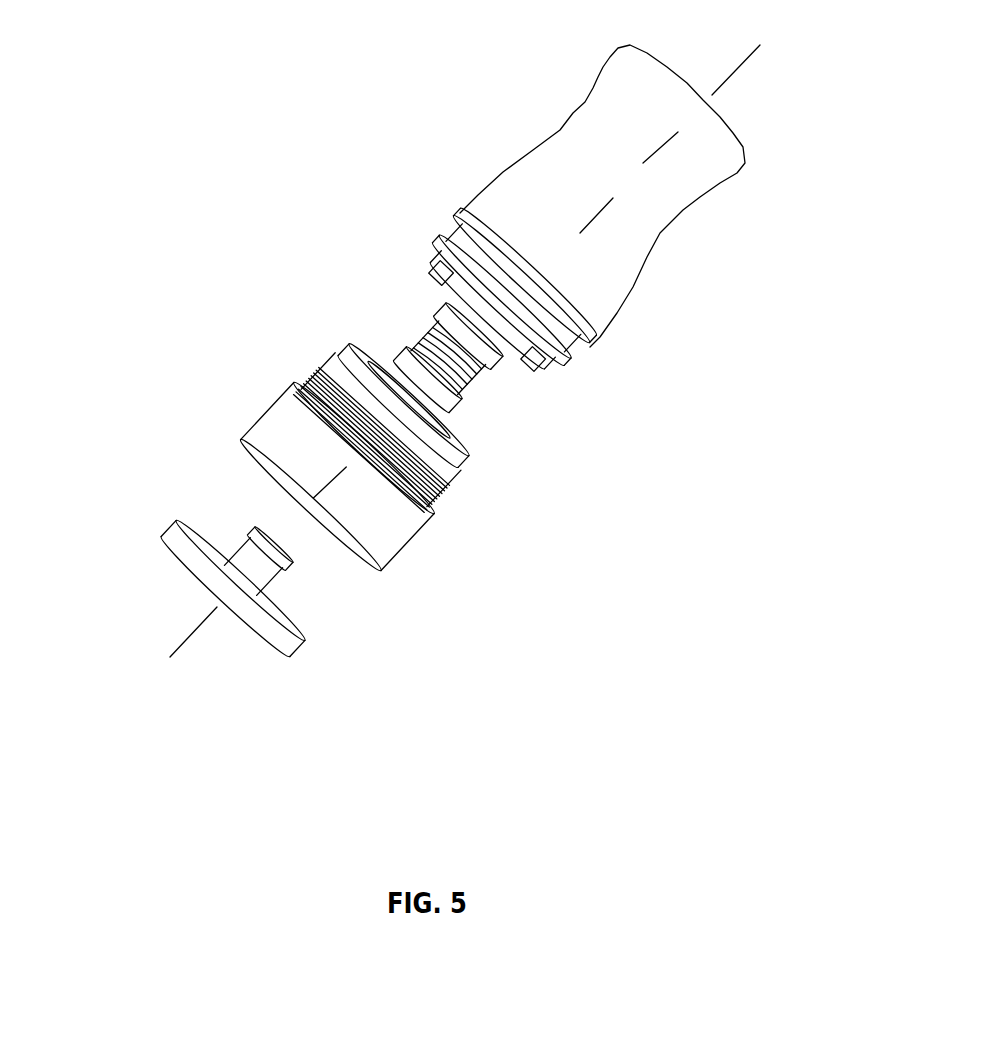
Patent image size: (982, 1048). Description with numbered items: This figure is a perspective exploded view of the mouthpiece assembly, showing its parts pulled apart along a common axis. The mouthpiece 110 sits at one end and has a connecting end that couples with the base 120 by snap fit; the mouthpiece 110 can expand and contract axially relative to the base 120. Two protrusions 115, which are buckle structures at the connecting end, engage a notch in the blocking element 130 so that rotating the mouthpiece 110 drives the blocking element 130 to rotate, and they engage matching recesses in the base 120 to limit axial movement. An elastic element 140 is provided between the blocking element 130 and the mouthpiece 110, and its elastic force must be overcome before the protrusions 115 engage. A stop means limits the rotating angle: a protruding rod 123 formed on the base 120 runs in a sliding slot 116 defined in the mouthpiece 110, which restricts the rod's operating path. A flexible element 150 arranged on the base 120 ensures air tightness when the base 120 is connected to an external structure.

The mouthpiece 110 is at (645, 260).
The protrusions 115 is at (440, 282).
The sliding slot 116 is at (452, 232).
The base 120 is at (395, 537).
The protruding rod 123 is at (433, 466).
The blocking element 130 is at (348, 362).
The elastic element 140 is at (457, 393).
The flexible element 150 is at (167, 533).